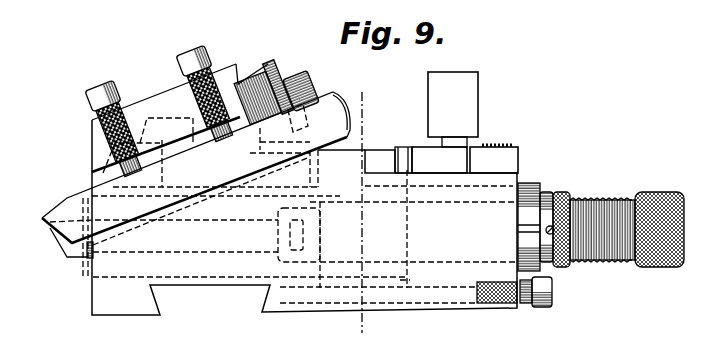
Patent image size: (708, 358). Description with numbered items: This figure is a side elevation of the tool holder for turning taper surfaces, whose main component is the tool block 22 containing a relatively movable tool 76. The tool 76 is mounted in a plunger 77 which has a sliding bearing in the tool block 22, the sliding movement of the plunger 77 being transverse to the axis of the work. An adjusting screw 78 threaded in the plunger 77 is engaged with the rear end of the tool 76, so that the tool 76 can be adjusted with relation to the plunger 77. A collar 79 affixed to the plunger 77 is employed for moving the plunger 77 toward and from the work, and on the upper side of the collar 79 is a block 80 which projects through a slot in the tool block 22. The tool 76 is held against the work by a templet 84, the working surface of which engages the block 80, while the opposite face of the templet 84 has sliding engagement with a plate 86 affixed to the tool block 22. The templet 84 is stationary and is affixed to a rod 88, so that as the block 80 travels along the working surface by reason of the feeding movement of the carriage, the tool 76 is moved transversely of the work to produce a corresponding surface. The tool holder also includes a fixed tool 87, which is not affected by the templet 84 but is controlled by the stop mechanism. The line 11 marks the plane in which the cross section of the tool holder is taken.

The section line 11- 11 is at (367, 212).
The tool block 22 is at (507, 177).
The tool 76 is at (58, 247).
The plunger 77 is at (83, 275).
The adjusting screw 78 is at (600, 200).
The collar 79 is at (410, 230).
The block 80 is at (383, 151).
The templet 84 is at (439, 160).
The plate 86 is at (494, 159).
The fixed tool 87 is at (63, 203).
The rod 88 is at (453, 109).